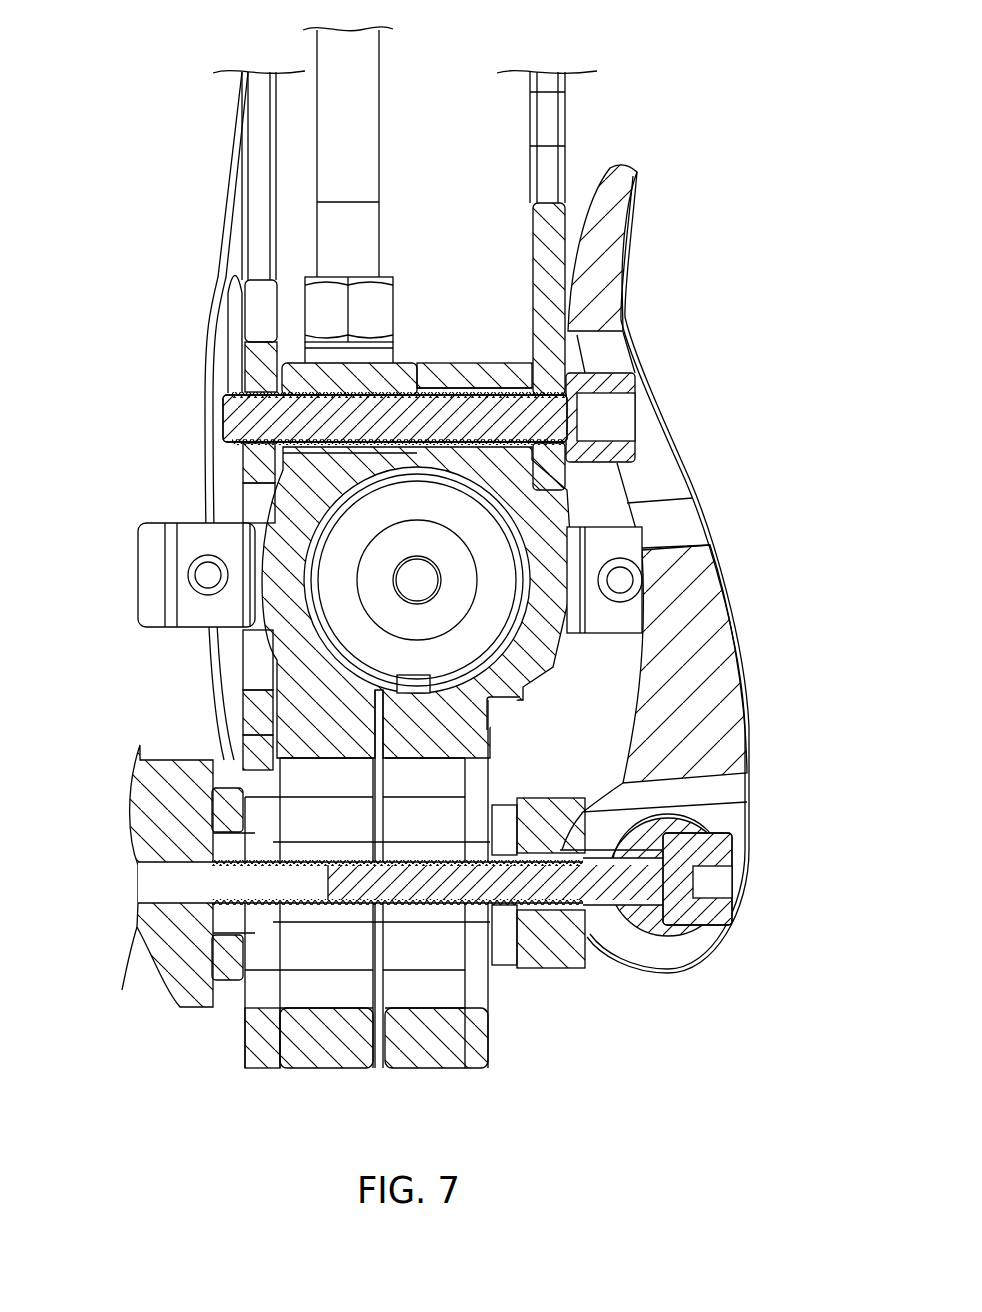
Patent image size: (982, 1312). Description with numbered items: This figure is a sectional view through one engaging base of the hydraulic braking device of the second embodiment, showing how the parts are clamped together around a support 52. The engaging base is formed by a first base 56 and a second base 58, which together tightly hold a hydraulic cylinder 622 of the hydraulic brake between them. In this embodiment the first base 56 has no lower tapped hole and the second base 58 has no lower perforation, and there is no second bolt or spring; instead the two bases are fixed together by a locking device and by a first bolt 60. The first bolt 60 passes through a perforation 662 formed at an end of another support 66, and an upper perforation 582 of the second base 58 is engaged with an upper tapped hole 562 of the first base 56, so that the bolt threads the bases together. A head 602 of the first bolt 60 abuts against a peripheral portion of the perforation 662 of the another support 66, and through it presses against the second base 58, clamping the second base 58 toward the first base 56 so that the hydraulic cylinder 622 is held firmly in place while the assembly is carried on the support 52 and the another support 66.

The support 52 is at (260, 372).
The first base 56 is at (310, 1048).
The second base 58 is at (445, 1053).
The first bolt 60 is at (440, 410).
The another support 66 is at (557, 222).
The upper tapped hole 562 is at (312, 392).
The upper perforation 582 is at (463, 363).
The head 602 is at (627, 449).
The hydraulic cylinder 622 is at (327, 530).
The perforation 662 is at (530, 372).